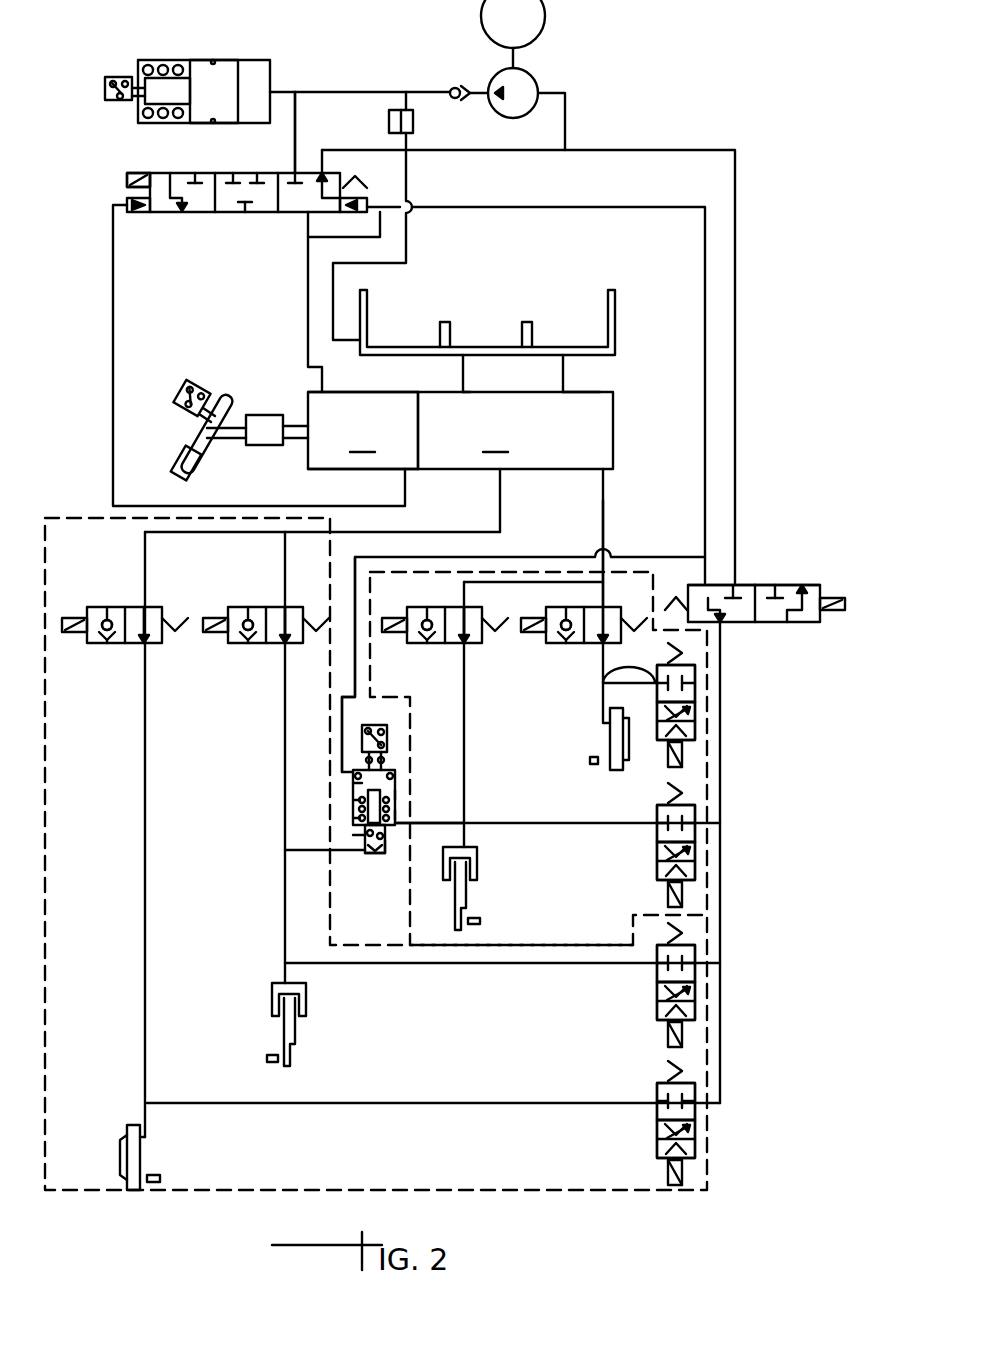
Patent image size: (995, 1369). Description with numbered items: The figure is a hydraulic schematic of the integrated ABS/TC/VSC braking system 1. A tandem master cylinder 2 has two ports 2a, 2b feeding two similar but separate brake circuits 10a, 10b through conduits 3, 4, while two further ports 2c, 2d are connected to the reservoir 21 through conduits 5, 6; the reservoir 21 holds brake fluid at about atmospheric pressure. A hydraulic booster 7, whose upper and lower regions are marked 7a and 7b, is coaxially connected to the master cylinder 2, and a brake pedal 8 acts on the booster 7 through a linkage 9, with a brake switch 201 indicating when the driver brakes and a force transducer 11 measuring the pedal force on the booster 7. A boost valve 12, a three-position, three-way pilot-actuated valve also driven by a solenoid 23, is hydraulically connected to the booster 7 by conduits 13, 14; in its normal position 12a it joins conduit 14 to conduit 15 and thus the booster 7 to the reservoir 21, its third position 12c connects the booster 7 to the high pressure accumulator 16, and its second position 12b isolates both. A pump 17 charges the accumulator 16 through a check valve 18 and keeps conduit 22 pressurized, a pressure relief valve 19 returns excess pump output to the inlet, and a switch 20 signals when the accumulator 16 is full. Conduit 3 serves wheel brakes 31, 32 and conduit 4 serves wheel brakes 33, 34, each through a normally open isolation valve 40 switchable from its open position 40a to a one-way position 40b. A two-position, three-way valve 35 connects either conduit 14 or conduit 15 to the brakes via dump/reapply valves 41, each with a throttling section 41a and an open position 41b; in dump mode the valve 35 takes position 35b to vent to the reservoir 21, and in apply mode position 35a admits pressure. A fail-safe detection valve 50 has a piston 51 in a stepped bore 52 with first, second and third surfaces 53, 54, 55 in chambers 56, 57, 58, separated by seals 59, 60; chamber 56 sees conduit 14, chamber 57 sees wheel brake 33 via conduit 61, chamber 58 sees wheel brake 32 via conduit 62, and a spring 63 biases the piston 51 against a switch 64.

The integrated ABS/TC/VSC braking system 1 is at (697, 123).
The tandem master cylinder 2 is at (543, 482).
The port 2a is at (503, 478).
The port 2b is at (606, 478).
The port 2c is at (567, 390).
The port 2d is at (466, 390).
The conduit 3 is at (503, 518).
The conduit 4 is at (606, 528).
The conduit 5 is at (562, 373).
The conduit 6 is at (462, 372).
The hydraulic booster 7 is at (361, 432).
The tank 7 top 7a is at (326, 391).
The tank 7 bottom 7b is at (398, 470).
The brake pedal 8 is at (186, 458).
The linkage 9 is at (215, 460).
The brake circuit 10a is at (722, 923).
The brake circuit 10b is at (722, 880).
The force transducer 11 is at (263, 414).
The boost valve 12 is at (247, 226).
The normal position 12a is at (290, 214).
The second position 12b is at (222, 214).
The third position 12c is at (160, 214).
The conduit 13 is at (112, 338).
The conduit 14 is at (307, 335).
The conduit 15 is at (478, 152).
The high pressure accumulator 16 is at (257, 60).
The pump 17 is at (540, 76).
The check valve 18 is at (450, 88).
The pressure relief valve 19 is at (417, 123).
The switch 20 is at (113, 102).
The reservoir 21 is at (615, 318).
The conduit 22 is at (294, 146).
The solenoid 23 is at (127, 180).
The wheel brake 31 is at (140, 1153).
The wheel brake 32 is at (303, 998).
The wheel brake 33 is at (480, 863).
The wheel brake 34 is at (600, 742).
The 2-position, 3-way valve 35 is at (755, 783).
The first position 35a is at (743, 583).
The second position 35b is at (787, 583).
The isolation valve 40 is at (140, 647).
The normally open position 40a is at (153, 603).
The one-way position 40b is at (93, 606).
The dump/reapply valve 41 is at (687, 660).
The throttle section 41a is at (640, 665).
The open position 41b is at (655, 748).
The fail-safe detection valve 50 is at (379, 745).
The piston 51 is at (385, 848).
The cylindrical stepped bore 52 is at (353, 818).
The first surface 53 is at (393, 745).
The second surface 54 is at (353, 800).
The third surface 55 is at (370, 853).
The first chamber 56 is at (352, 770).
The second chamber 57 is at (395, 795).
The third chamber 58 is at (385, 855).
The fluid tight seal 59 is at (353, 783).
The fluid tight seal 60 is at (365, 838).
The conduit 61 is at (468, 822).
The conduit 62 is at (307, 851).
The spring 63 is at (393, 815).
The switch 64 is at (342, 712).
The brake switch 201 is at (177, 397).